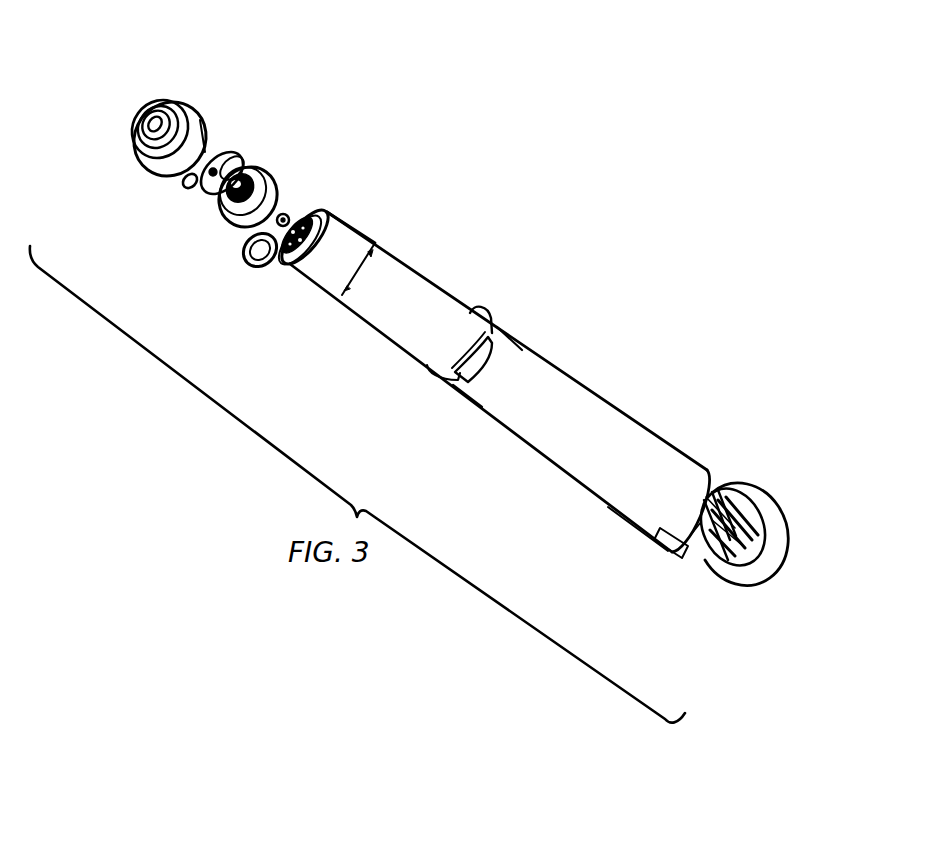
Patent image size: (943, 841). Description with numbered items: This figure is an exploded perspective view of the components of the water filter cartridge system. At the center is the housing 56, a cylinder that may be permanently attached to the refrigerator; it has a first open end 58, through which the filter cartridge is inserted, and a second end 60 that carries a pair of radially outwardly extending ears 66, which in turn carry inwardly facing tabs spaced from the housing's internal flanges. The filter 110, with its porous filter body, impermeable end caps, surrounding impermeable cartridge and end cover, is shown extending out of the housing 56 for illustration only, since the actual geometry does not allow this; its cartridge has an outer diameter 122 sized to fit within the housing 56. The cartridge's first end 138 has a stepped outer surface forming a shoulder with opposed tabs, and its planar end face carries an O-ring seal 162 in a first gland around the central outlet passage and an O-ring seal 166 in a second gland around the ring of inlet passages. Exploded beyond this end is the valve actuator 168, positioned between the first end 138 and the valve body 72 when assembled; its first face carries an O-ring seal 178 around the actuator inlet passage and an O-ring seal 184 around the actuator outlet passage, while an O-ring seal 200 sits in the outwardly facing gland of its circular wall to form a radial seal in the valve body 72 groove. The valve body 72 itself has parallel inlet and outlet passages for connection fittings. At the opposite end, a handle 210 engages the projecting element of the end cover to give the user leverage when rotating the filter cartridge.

The housing 56 is at (588, 406).
The first open end 58 is at (713, 483).
The second end 60 is at (480, 313).
The radially outwardly extending ears 66 is at (490, 350).
The valve body 72 is at (203, 107).
The filter 110 is at (387, 257).
The outer diameter 122 is at (352, 280).
The first end 138 is at (327, 210).
The O-ring seal 162 is at (283, 214).
The O-ring seal 166 is at (247, 270).
The valve actuator 168 is at (277, 174).
The O-ring seal 178 is at (203, 186).
The O-ring seal 184 is at (184, 189).
The O-ring seal 200 is at (218, 176).
The handle 210 is at (757, 580).